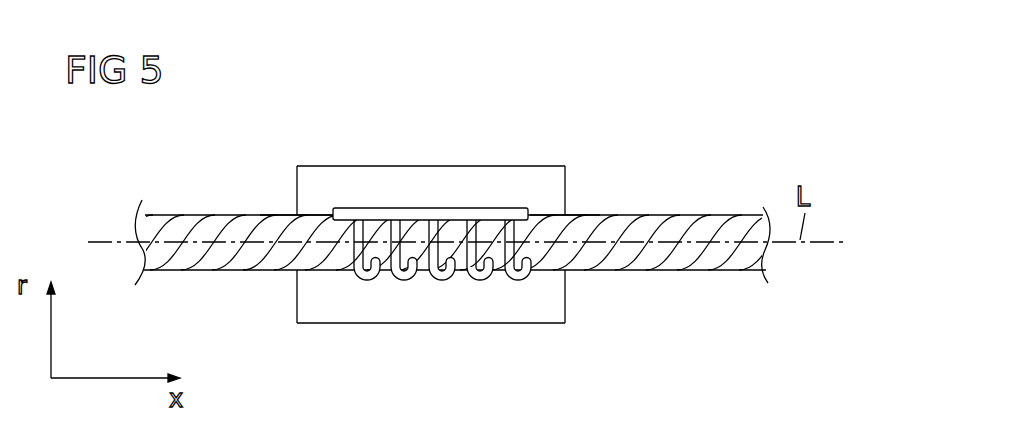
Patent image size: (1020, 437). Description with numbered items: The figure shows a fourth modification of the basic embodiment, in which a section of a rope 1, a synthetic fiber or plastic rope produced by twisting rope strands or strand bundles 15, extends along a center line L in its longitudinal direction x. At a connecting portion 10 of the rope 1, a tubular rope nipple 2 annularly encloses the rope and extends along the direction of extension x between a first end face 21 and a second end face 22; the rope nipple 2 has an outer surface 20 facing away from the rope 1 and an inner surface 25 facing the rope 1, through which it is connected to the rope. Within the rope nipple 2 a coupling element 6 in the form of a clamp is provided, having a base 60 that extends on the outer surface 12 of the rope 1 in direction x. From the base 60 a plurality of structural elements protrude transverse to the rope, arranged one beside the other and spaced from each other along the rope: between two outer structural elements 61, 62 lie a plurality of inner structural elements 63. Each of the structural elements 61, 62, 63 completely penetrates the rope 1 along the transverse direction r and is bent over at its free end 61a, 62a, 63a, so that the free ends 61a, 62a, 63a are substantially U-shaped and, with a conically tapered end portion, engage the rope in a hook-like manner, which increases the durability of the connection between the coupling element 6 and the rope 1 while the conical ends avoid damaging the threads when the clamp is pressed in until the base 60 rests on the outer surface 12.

The rope 1 is at (446, 234).
The rope nipple 2 is at (433, 245).
The coupling element 6 is at (447, 245).
The connecting portion 10 is at (543, 217).
The outer surface 12 is at (717, 272).
The rope strands 15 is at (673, 255).
The outer surface 20 is at (433, 284).
The first end face 21 is at (297, 293).
The second end face 22 is at (567, 293).
The inner surface 25 is at (290, 221).
The base 60 is at (393, 213).
The outer structural element 61 is at (356, 242).
The free end 61a is at (365, 282).
The outer structural element 62 is at (538, 270).
The free end 62a is at (516, 282).
The inner structural elements 63 is at (445, 269).
The free ends 63a is at (480, 282).